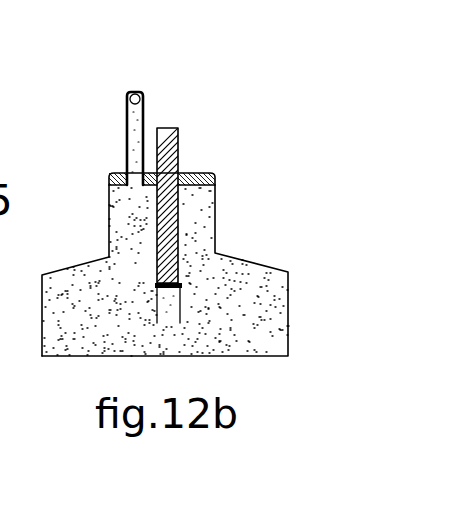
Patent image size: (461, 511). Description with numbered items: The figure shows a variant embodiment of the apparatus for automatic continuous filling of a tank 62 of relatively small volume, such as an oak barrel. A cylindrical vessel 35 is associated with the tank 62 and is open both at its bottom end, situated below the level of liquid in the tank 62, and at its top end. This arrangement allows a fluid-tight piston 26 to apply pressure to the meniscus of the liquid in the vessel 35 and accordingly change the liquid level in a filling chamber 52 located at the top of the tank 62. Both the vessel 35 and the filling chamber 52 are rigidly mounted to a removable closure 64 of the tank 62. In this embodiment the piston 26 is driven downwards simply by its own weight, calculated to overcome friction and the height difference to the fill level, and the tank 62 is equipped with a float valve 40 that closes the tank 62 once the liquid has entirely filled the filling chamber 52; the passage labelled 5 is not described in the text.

The channel / passage 5 is at (167, 317).
The fluid-tight piston 26 is at (177, 128).
The cylindrical vessel 35 is at (180, 237).
The float valve 40 is at (137, 90).
The filling chamber 52 is at (127, 135).
The tank 62 is at (257, 258).
The removable closure 64 is at (205, 170).